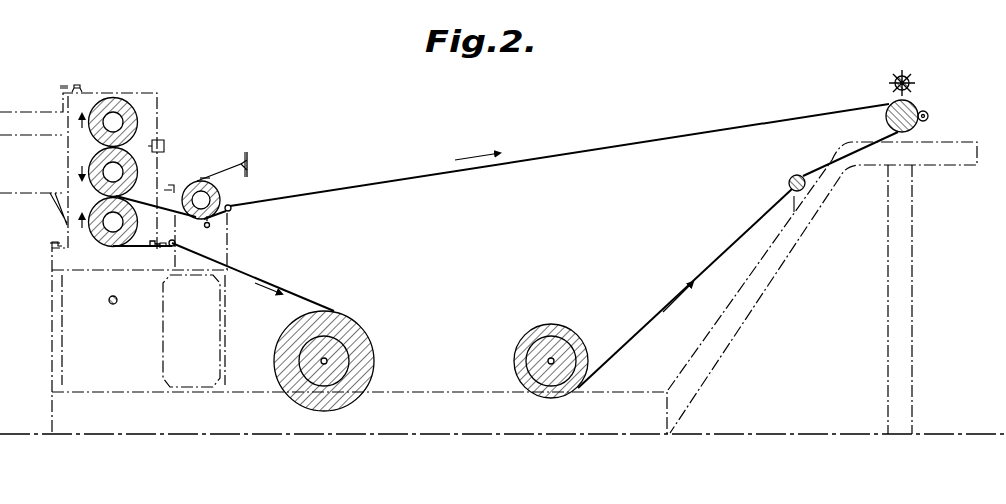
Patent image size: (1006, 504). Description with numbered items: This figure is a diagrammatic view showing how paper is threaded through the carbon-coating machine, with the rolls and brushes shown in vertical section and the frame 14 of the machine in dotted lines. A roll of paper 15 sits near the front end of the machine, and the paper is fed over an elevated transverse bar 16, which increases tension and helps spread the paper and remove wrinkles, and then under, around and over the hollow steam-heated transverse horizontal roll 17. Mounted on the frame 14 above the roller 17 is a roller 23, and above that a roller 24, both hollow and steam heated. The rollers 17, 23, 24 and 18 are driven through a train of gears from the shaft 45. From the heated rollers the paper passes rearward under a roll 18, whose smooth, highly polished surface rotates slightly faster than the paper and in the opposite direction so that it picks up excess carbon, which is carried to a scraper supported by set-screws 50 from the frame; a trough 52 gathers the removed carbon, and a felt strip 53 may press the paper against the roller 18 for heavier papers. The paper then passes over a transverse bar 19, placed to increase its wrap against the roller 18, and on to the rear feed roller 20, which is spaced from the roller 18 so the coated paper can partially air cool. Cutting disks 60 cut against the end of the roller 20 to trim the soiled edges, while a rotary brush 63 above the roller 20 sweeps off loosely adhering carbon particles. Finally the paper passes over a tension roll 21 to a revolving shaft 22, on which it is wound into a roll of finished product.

The frame 14 is at (385, 428).
The roll of paper 15 is at (366, 337).
The transverse bar 16 is at (178, 242).
The transverse horizontal roll 17 is at (97, 237).
The roll 18 is at (218, 192).
The transverse bar 19 is at (232, 210).
The transverse roll 20 is at (886, 118).
The tension roll 21 is at (789, 181).
The revolving shaft 22 is at (553, 357).
The roller 23 is at (137, 170).
The roller 24 is at (137, 122).
The shaft 45 is at (118, 300).
The set-screws 50 is at (222, 175).
The trough 52 is at (249, 163).
The felt strip 53 is at (215, 222).
The cutting disks 60 is at (929, 114).
The rotary brush 63 is at (903, 75).